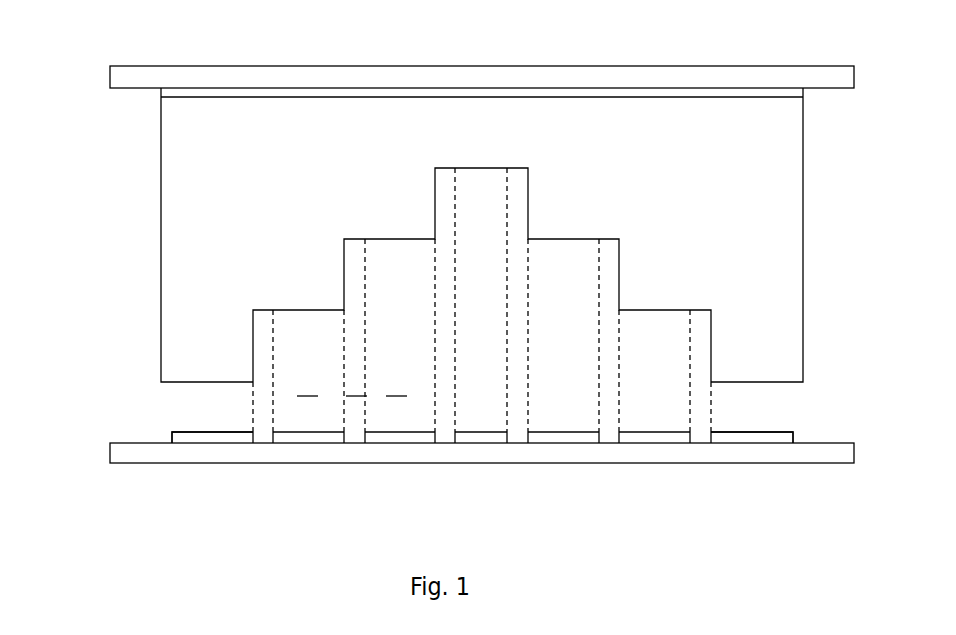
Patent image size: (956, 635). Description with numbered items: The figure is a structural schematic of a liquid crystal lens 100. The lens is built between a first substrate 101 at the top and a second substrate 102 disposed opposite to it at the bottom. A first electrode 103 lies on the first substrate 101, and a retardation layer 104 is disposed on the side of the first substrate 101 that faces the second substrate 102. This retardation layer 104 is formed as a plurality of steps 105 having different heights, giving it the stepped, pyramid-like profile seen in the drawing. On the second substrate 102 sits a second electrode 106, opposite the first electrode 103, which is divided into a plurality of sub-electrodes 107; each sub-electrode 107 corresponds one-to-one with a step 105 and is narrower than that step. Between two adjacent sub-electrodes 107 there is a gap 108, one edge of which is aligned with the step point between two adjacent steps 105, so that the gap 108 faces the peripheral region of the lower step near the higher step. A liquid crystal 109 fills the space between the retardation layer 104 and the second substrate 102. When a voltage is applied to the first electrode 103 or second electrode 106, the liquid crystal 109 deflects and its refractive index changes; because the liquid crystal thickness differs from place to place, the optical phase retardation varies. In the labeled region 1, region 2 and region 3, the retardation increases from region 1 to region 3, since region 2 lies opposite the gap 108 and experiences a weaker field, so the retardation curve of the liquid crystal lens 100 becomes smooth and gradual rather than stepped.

The liquid crystal lens 100 is at (167, 46).
The first substrate 101 is at (120, 80).
The second substrate 102 is at (120, 455).
The first electrode 103 is at (659, 90).
The retardation layer 104 is at (185, 147).
The steps 105 is at (290, 312).
The second electrode 106 is at (793, 470).
The sub-electrodes 107 is at (663, 440).
The gap 108 is at (260, 433).
The liquid crystal 109 is at (555, 300).
The region 1 is at (307, 380).
The region 2 is at (356, 380).
The region 3 is at (396, 380).